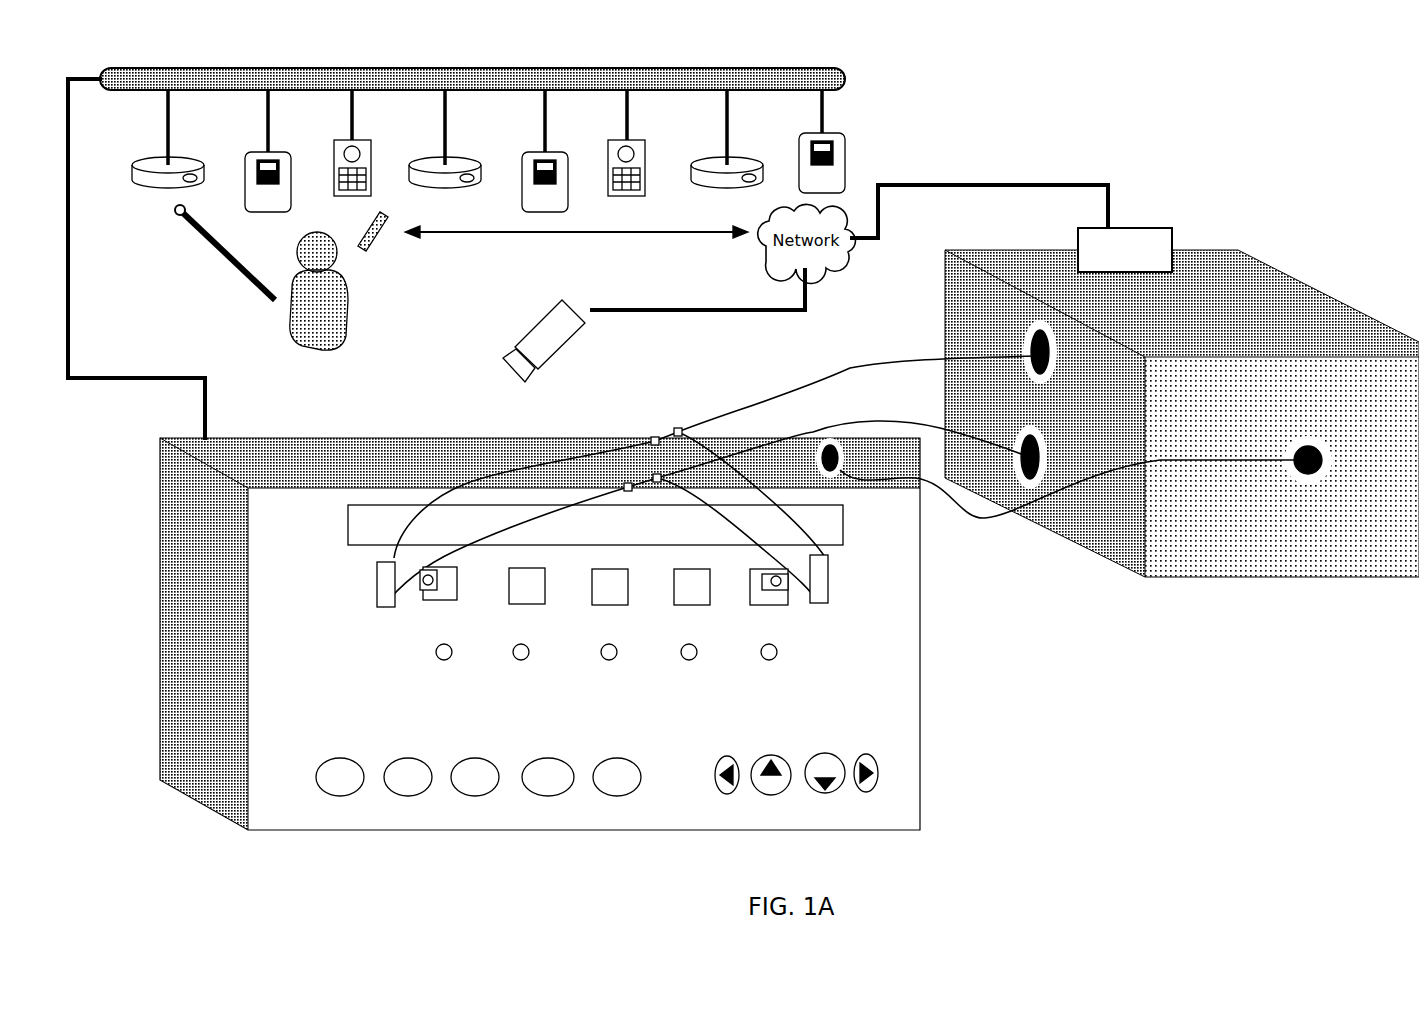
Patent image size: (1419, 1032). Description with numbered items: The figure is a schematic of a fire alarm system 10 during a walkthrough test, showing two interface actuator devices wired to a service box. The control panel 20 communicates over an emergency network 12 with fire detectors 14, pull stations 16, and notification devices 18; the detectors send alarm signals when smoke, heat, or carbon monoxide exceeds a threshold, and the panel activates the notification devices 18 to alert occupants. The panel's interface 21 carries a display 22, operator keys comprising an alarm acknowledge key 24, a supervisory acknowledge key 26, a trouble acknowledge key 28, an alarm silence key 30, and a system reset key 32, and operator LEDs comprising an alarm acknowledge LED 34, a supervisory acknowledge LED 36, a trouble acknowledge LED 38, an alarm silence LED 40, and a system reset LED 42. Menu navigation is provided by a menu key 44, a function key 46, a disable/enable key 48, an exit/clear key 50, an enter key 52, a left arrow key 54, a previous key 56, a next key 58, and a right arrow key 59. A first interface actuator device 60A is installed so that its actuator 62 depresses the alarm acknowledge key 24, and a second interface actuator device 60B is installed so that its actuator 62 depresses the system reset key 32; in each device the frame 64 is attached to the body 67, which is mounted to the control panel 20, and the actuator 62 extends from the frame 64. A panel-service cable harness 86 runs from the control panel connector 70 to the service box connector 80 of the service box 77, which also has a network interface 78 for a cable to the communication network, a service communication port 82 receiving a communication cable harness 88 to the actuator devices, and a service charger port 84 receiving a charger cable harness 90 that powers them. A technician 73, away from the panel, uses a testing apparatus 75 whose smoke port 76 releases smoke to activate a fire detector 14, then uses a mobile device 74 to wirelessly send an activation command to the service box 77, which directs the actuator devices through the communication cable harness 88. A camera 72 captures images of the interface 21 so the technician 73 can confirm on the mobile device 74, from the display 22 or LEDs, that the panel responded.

The fire alarm system 10 is at (1320, 100).
The emergency network 12 is at (548, 68).
The fire detectors 14 is at (187, 166).
The pull stations 16 is at (282, 161).
The notification devices 18 is at (371, 161).
The control panel 20 is at (955, 685).
The interface 21 is at (306, 505).
The display 22 is at (395, 518).
The alarm acknowledge key 24 is at (441, 604).
The supervisory acknowledge key 26 is at (526, 605).
The trouble acknowledge key 28 is at (604, 606).
The alarm silence key 30 is at (691, 606).
The system reset key 32 is at (767, 606).
The alarm acknowledge LED 34 is at (444, 661).
The supervisory acknowledge LED 36 is at (521, 661).
The trouble acknowledge LED 38 is at (609, 661).
The alarm silence LED 40 is at (689, 661).
The system reset LED 42 is at (769, 661).
The menu key 44 is at (340, 758).
The function key 46 is at (408, 758).
The disable/enable key 48 is at (476, 758).
The exit/clear key 50 is at (548, 758).
The enter key 52 is at (618, 758).
The left arrow key 54 is at (727, 756).
The previous key 56 is at (773, 755).
The next key 58 is at (826, 753).
The right arrow key 59 is at (868, 754).
The first interface actuator device 60A is at (343, 574).
The second interface actuator device 60B is at (850, 576).
The actuator 62 is at (446, 573).
The frame 64 is at (418, 599).
The body 67 is at (378, 594).
The control panel connector 70 is at (845, 461).
The camera 72 is at (530, 340).
The technician 73 is at (302, 330).
The mobile device 74 is at (370, 255).
The testing apparatus 75 is at (228, 262).
The smoke port 76 is at (177, 213).
The service box 77 is at (1262, 300).
The network interface 78 is at (1150, 246).
The service box connector 80 is at (1321, 438).
The service communication port 82 is at (1029, 346).
The service charger port 84 is at (1022, 433).
The panel-service cable harness 86 is at (1012, 512).
The communication cable harness 88 is at (838, 377).
The charger cable harness 90 is at (897, 417).